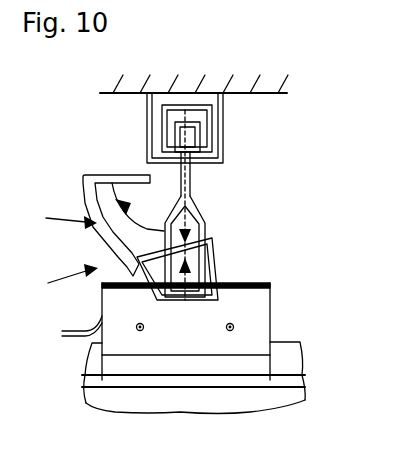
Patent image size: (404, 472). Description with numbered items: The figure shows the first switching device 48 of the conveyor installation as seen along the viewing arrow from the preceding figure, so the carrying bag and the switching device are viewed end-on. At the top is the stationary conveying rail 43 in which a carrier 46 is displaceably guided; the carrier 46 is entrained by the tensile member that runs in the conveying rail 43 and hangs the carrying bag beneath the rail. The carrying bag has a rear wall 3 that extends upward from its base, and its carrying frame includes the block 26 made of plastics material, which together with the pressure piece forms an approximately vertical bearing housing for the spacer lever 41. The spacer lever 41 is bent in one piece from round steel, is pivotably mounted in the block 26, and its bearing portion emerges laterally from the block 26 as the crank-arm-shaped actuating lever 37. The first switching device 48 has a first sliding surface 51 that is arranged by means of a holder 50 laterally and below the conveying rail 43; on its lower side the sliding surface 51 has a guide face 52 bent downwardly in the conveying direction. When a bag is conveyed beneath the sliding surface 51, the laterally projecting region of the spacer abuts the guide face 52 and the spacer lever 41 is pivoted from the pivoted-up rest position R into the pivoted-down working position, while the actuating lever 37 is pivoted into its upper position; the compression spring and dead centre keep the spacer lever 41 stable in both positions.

The rear wall 3 is at (232, 405).
The block 26 is at (253, 314).
The actuating lever 37 is at (75, 326).
The spacer lever 41 is at (207, 216).
The conveying rail 43 is at (222, 138).
The carrier 46 is at (191, 182).
The first switching device 48 is at (58, 279).
The holder 50 is at (135, 175).
The first sliding surface 51 is at (58, 220).
The guide face 52 is at (107, 240).
The rest position R is at (185, 300).